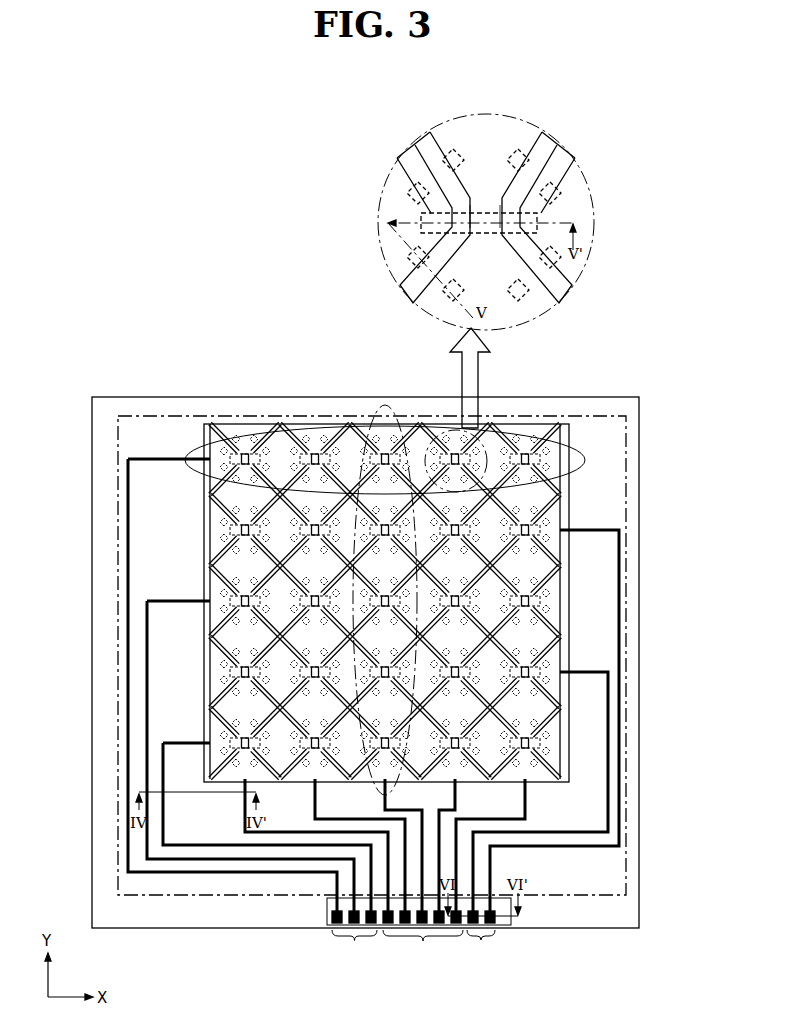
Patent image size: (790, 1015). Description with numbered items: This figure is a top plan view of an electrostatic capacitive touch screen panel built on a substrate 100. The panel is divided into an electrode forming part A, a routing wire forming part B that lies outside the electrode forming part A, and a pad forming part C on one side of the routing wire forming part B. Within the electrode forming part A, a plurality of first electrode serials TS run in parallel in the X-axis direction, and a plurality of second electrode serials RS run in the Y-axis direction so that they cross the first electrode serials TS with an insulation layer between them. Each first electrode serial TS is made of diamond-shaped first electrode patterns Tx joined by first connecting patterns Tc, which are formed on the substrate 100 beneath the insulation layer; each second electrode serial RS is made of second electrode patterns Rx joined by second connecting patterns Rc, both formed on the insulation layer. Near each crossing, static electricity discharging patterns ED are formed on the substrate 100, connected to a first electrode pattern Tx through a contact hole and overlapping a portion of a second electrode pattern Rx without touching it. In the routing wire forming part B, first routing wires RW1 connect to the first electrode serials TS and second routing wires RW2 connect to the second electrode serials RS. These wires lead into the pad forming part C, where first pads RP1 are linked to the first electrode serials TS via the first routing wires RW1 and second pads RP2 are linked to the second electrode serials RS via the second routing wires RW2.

The substrate 100 is at (627, 910).
The routing wire forming part B is at (160, 416).
The electrode forming part A is at (296, 419).
The first electrode serials TS is at (585, 460).
The second electrode serials RS is at (387, 402).
The second electrode patterns Rx is at (470, 130).
The first electrode patterns Tx is at (393, 257).
The second connecting patterns Rc is at (487, 203).
The first connecting patterns Tc is at (421, 218).
The static electricity discharging patterns ED is at (450, 155).
The first routing wires RW1 is at (126, 517).
The second routing wires RW2 is at (528, 797).
The pad forming part C is at (327, 903).
The first pads RP1 is at (415, 938).
The second pads RP2 is at (423, 938).